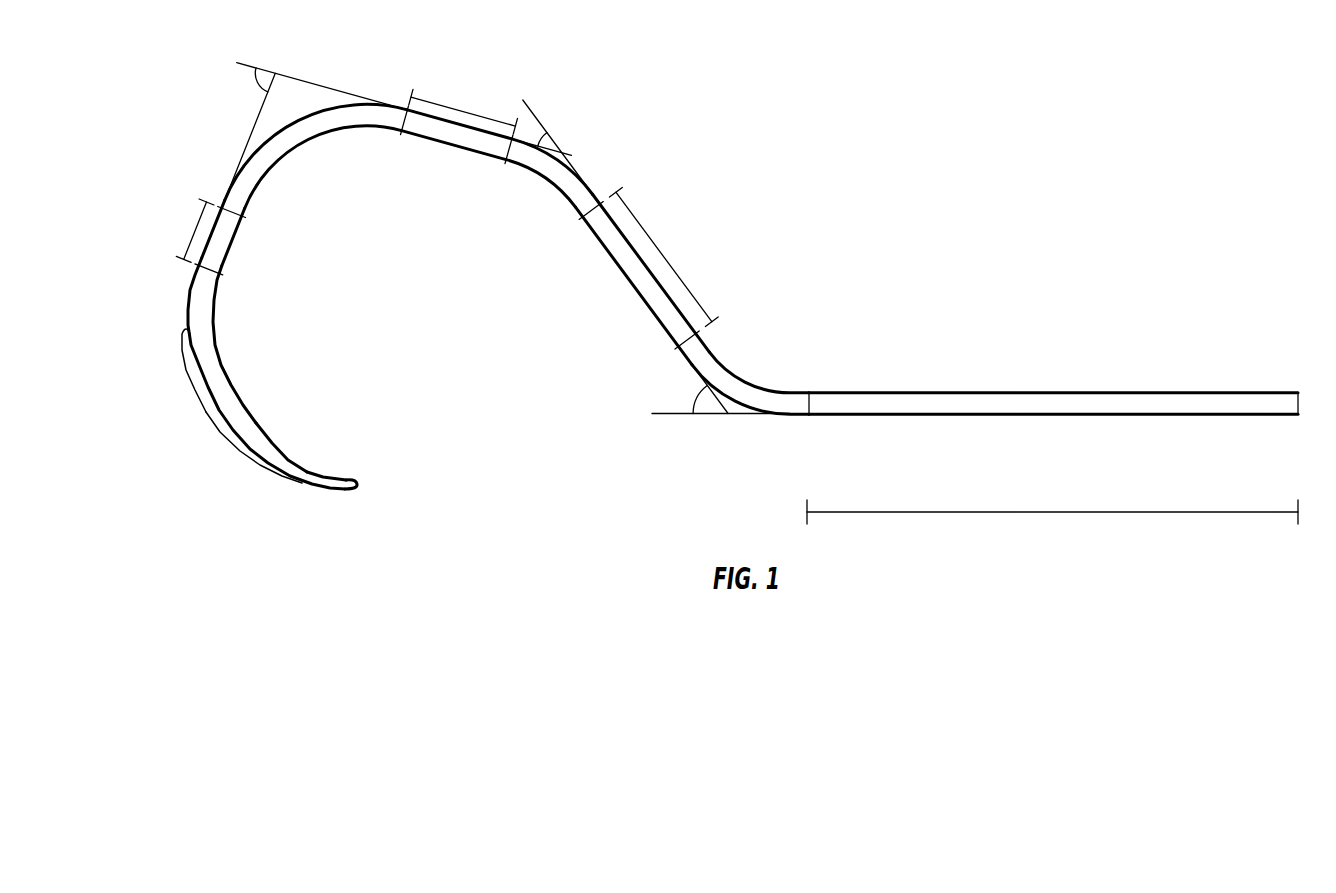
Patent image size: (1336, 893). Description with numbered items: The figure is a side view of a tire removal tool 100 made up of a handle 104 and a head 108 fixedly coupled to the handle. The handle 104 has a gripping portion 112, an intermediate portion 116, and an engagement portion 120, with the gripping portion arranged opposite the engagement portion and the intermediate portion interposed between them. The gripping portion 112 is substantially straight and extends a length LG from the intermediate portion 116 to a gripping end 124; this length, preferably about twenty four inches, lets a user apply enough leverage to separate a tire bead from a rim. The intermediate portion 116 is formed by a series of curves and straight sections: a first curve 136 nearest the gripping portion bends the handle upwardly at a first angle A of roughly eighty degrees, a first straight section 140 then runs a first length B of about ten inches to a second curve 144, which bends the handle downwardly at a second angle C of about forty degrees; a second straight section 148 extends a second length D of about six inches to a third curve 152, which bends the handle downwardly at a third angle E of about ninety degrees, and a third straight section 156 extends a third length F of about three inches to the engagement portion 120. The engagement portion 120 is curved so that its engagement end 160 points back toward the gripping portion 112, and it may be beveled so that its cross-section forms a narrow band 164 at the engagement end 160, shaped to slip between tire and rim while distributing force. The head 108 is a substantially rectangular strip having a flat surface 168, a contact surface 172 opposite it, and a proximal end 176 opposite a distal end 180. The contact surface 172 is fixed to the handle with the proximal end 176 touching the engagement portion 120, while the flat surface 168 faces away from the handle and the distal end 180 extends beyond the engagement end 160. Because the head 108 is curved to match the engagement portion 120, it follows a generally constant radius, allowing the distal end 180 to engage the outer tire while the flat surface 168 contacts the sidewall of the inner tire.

The tool 100 is at (951, 186).
The handle 104 is at (843, 402).
The head 108 is at (237, 460).
The gripping portion 112 is at (1003, 404).
The intermediate portion 116 is at (488, 147).
The engagement portion 120 is at (218, 385).
The gripping end 124 is at (1271, 402).
The first curve 136 is at (760, 388).
The first straight section 140 is at (636, 271).
The second curve 144 is at (537, 165).
The second straight section 148 is at (450, 137).
The third curve 152 is at (309, 137).
The third straight section 156 is at (222, 243).
The engagement end 160 is at (288, 463).
The narrow band 164 is at (308, 472).
The flat surface 168 is at (213, 416).
The contact surface 172 is at (226, 418).
The proximal end 176 is at (187, 327).
The distal end 180 is at (343, 485).
The first angle A is at (700, 390).
The first length B is at (663, 254).
The second angle C is at (543, 134).
The second length D is at (440, 104).
The third angle E is at (250, 80).
The third length F is at (192, 230).
The length of gripping portion LG is at (1047, 512).